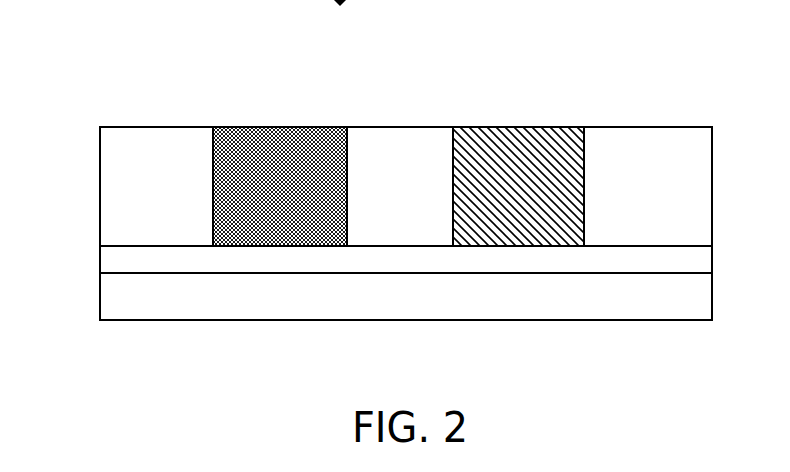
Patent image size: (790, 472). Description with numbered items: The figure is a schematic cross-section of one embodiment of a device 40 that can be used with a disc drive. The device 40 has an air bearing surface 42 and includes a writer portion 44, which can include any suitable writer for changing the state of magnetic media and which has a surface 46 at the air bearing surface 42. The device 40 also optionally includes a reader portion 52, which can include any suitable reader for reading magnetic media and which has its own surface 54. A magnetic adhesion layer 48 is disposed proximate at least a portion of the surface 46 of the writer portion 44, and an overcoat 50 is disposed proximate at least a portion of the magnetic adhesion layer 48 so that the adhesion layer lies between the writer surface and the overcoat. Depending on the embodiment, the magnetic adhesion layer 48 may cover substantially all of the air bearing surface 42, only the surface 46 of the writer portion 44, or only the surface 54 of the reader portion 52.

The device 40 is at (654, 46).
The air bearing surface 42 is at (157, 340).
The writer portion 44 is at (527, 127).
The surface of the writer portion 46 is at (519, 247).
The magnetic adhesion layer 48 is at (100, 258).
The overcoat 50 is at (100, 298).
The reader portion 52 is at (278, 127).
The surface of the reader portion 54 is at (280, 247).